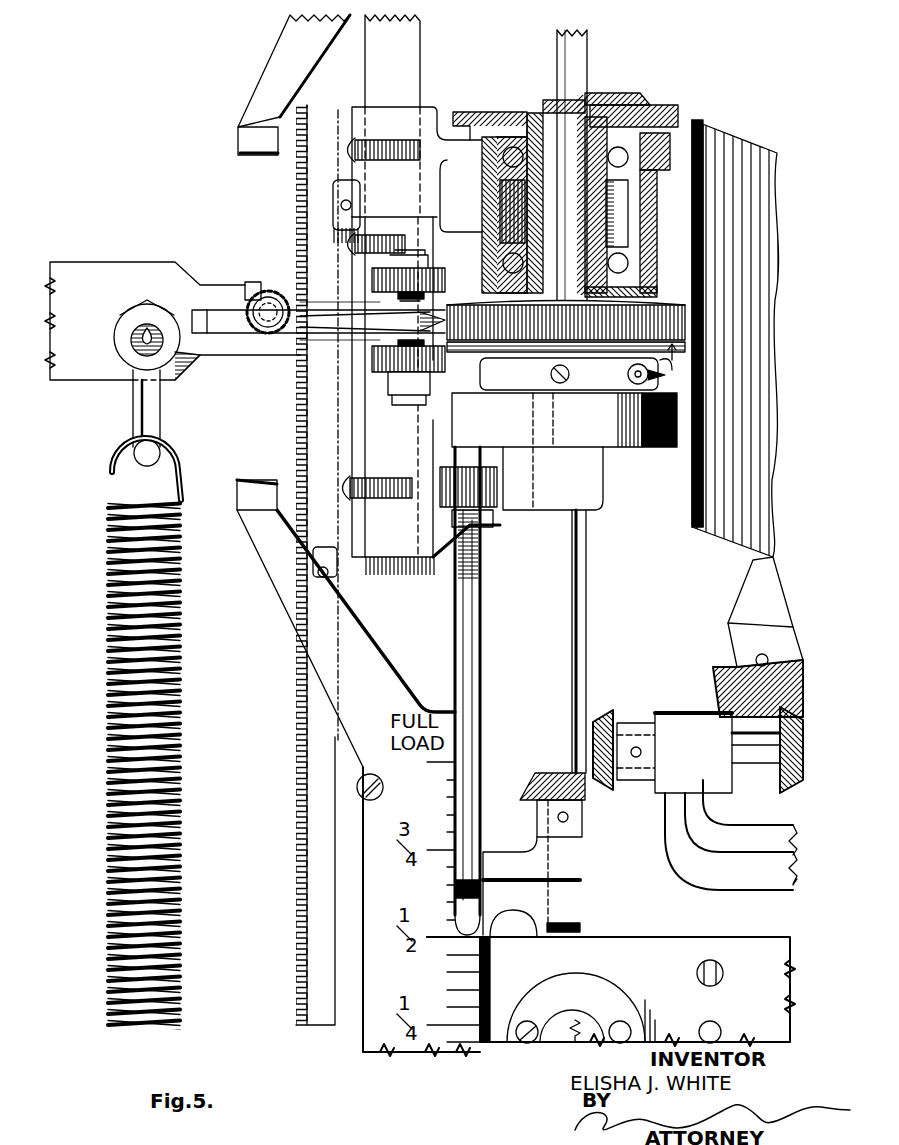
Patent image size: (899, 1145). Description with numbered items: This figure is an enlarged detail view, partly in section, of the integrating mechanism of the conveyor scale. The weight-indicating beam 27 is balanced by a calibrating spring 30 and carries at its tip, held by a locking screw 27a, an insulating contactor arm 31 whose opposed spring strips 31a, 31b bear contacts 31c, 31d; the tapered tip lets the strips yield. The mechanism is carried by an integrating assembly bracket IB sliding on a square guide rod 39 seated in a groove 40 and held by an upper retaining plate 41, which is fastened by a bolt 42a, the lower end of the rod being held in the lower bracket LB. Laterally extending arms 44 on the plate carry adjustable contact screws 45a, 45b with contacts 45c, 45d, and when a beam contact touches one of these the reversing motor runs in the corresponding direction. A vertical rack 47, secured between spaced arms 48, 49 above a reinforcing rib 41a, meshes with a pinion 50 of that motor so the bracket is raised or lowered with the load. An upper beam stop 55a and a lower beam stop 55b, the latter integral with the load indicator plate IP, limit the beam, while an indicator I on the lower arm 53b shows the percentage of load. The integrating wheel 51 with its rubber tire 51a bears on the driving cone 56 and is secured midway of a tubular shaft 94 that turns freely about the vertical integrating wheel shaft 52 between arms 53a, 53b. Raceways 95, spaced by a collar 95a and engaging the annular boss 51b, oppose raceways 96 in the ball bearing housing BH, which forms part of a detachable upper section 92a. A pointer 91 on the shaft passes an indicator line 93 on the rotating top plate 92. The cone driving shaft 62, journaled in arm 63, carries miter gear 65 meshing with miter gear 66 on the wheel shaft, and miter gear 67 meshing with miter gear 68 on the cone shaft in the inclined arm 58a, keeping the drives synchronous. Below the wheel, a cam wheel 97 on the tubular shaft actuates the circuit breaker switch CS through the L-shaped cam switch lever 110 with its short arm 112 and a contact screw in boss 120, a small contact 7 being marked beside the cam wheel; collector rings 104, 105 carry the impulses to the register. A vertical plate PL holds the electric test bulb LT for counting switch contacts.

The upper beam stop 55a is at (268, 76).
The guide rod 39 is at (405, 55).
The bolt 42a is at (380, 140).
The longitudinal groove 40 is at (425, 118).
The detachable upper section 92a is at (452, 150).
The pointer 91 is at (628, 108).
The indicator line 93 is at (640, 110).
The top plate 92 is at (680, 118).
The driving cone 56 is at (733, 150).
The spaced arm 48 is at (325, 193).
The spring strip 31a is at (330, 256).
The beam 27 is at (85, 270).
The locking screw 27a is at (250, 280).
The contact screw 45a is at (405, 262).
The spaced arms 44 is at (442, 280).
The contact 45c is at (430, 290).
The contact 31c is at (420, 302).
The ball bearing raceways 95 is at (524, 160).
The collar 95a is at (526, 196).
The tubular shaft 94 is at (600, 222).
The raceways 96 is at (510, 185).
The ball bearing housing BH is at (656, 212).
The arm 53a is at (640, 243).
The integrating wheel 51 is at (650, 303).
The rubber tire 51a is at (703, 300).
The annular boss 51b is at (524, 310).
The cam switch lever 110 is at (510, 358).
The cam wheel 97 is at (628, 355).
The contact 7 is at (678, 349).
The boss 120 is at (665, 362).
The circuit breaker switch CS is at (660, 368).
The upper collector ring 104 is at (672, 400).
The lower collector ring 105 is at (672, 430).
The short arm 112 is at (645, 447).
The arm 53b is at (598, 482).
The contact 31d is at (425, 342).
The contact 45d is at (425, 356).
The contact screw 45b is at (400, 414).
The upper retaining plate 41 is at (360, 430).
The integrating assembly bracket IB is at (318, 450).
The pinion 50 is at (277, 338).
The contactor arm 31 is at (322, 322).
The spring strip 31b is at (373, 333).
The lower beam stop 55b is at (252, 511).
The spaced arm 49 is at (325, 548).
The reinforcing rib 41a is at (300, 593).
The calibrating spring 30 is at (103, 668).
The rack 47 is at (300, 742).
The integrating wheel shaft 52 is at (588, 620).
The inclined arm 58a is at (748, 582).
The miter gear 65 is at (600, 712).
The miter gear 68 is at (715, 672).
The miter gear 66 is at (535, 775).
The indicator I is at (483, 660).
The lower bracket LB is at (497, 850).
The cone driving shaft 62 is at (755, 765).
The miter gear 67 is at (790, 790).
The arm 63 is at (690, 845).
The load indicator plate IP is at (330, 903).
The vertical plate PL is at (655, 945).
The electric test bulb LT is at (585, 1010).